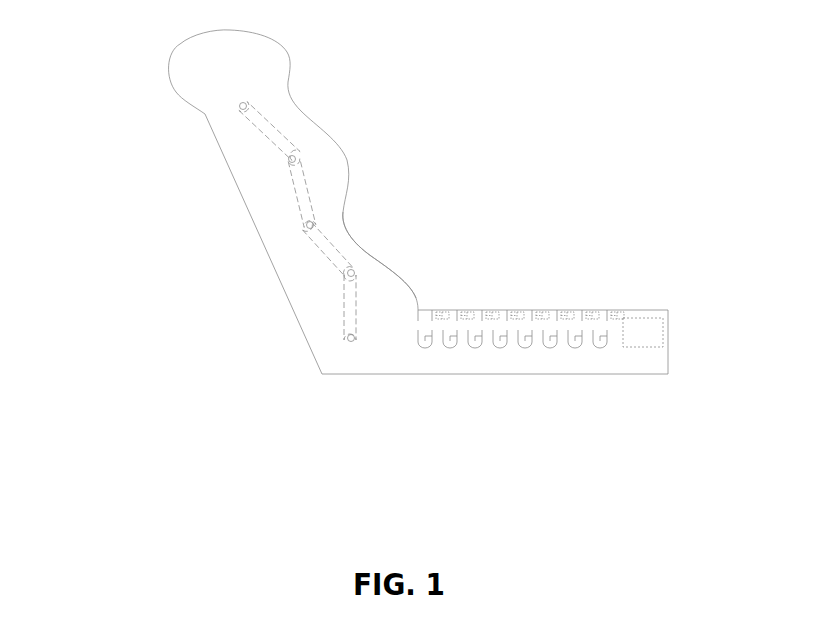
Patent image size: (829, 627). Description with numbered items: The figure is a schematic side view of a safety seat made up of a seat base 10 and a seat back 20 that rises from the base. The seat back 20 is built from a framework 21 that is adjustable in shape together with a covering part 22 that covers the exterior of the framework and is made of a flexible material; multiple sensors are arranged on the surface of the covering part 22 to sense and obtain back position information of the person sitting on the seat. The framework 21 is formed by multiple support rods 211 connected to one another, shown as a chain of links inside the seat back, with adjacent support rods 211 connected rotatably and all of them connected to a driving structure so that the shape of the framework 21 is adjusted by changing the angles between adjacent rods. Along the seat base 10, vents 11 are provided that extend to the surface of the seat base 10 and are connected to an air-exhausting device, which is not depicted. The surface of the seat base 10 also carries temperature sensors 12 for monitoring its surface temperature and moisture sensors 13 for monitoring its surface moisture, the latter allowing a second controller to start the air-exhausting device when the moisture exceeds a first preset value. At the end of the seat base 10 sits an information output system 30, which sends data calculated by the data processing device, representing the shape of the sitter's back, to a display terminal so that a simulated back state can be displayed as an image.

The seat base 10 is at (494, 374).
The vents 11 is at (423, 348).
The temperature sensors 12 is at (438, 312).
The moisture sensors 13 is at (617, 312).
The seat back 20 is at (262, 238).
The framework 21 is at (310, 233).
The support rods 211 is at (303, 180).
The covering part 22 is at (357, 255).
The information output system 30 is at (648, 330).